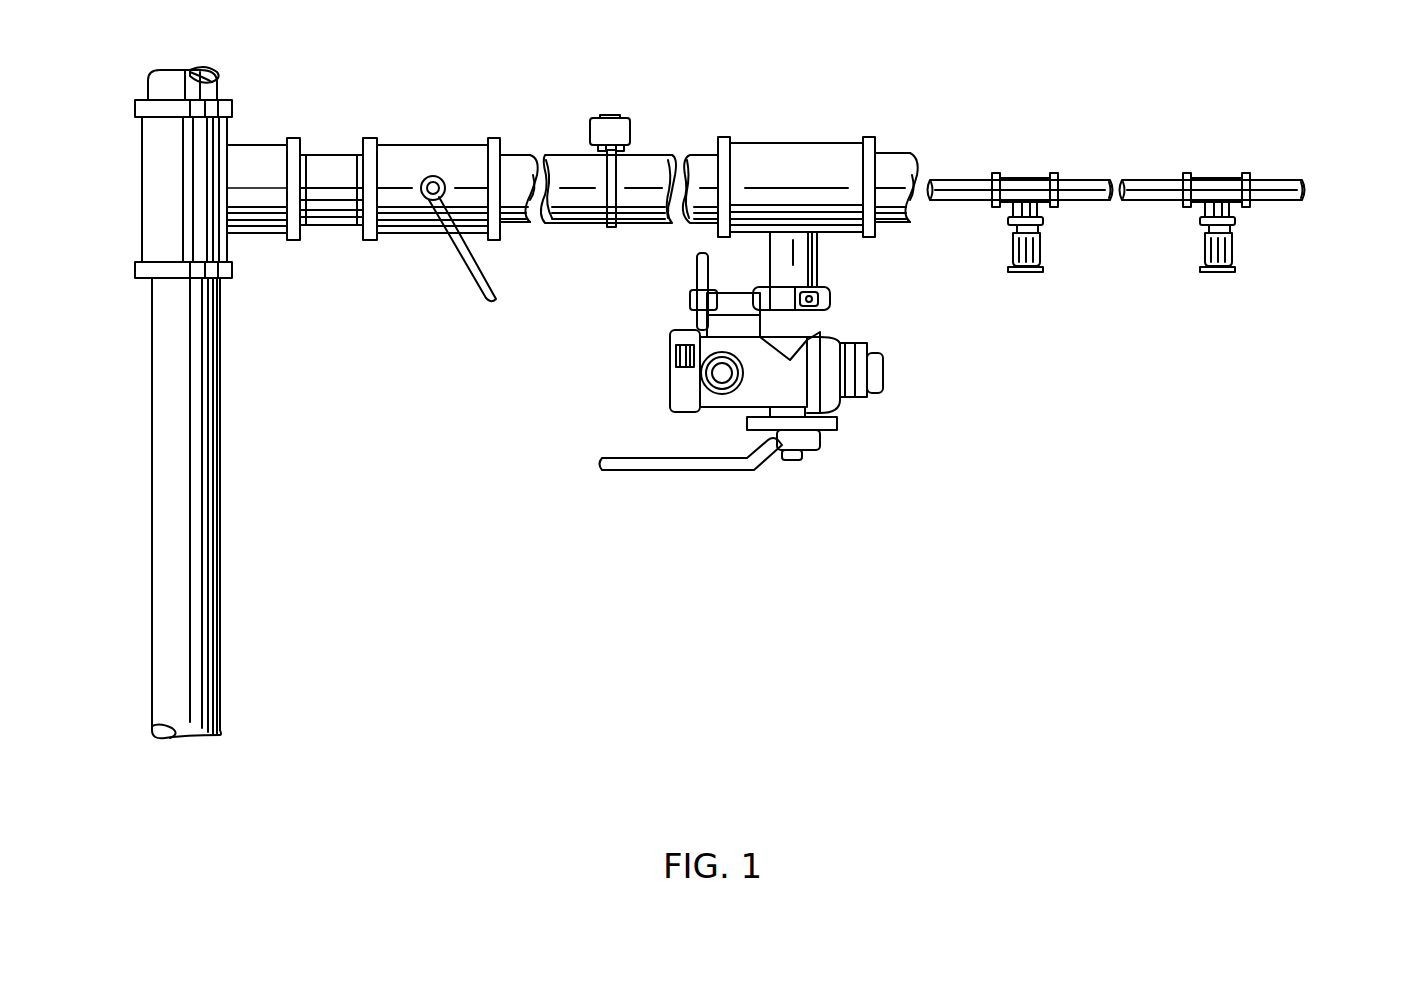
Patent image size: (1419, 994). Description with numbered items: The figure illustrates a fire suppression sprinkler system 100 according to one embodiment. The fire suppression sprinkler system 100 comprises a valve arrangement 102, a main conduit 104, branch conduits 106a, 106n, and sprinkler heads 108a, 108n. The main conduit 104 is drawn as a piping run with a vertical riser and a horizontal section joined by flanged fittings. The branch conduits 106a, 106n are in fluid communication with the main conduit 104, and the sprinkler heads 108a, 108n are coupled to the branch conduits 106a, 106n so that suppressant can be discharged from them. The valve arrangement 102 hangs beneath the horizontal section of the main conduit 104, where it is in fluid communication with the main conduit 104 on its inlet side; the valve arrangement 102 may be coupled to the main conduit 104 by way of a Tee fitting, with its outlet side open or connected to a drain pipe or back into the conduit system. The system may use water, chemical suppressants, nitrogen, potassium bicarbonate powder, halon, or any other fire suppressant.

The fire suppression sprinkler system 100 is at (1168, 679).
The valve arrangement 102 is at (922, 395).
The main conduit 104 is at (330, 157).
The branch conduit 106a is at (958, 180).
The branch conduit 106n is at (1155, 180).
The sprinkler head 108a is at (1038, 253).
The sprinkler head 108n is at (1230, 253).